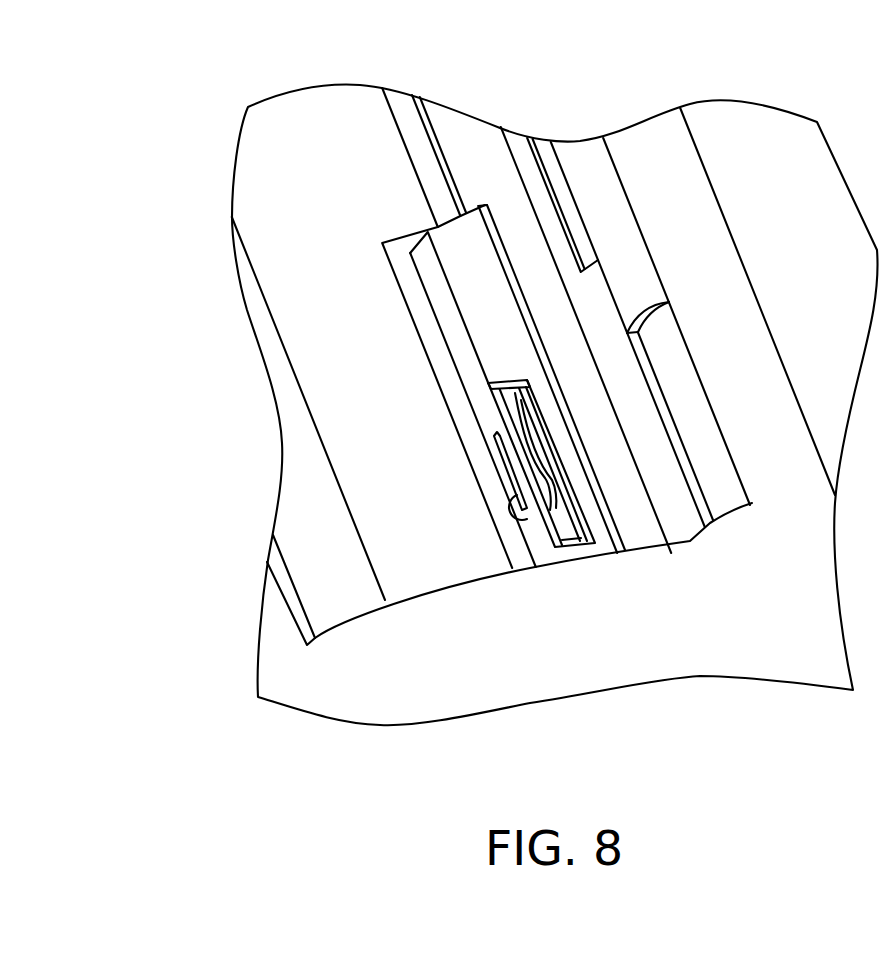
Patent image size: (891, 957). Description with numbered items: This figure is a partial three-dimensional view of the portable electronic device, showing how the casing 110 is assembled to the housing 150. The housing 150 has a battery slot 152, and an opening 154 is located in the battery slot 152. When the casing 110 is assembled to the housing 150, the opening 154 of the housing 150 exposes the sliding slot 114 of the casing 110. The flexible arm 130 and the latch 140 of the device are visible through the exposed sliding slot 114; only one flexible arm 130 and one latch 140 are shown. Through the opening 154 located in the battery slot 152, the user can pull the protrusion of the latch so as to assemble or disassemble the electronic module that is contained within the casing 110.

The casing 110 is at (478, 318).
The sliding slot 114 is at (506, 469).
The flexible arm 130 is at (518, 420).
The latch 140 is at (522, 513).
The housing 150 is at (320, 682).
The battery slot 152 is at (598, 300).
The opening 154 is at (510, 267).